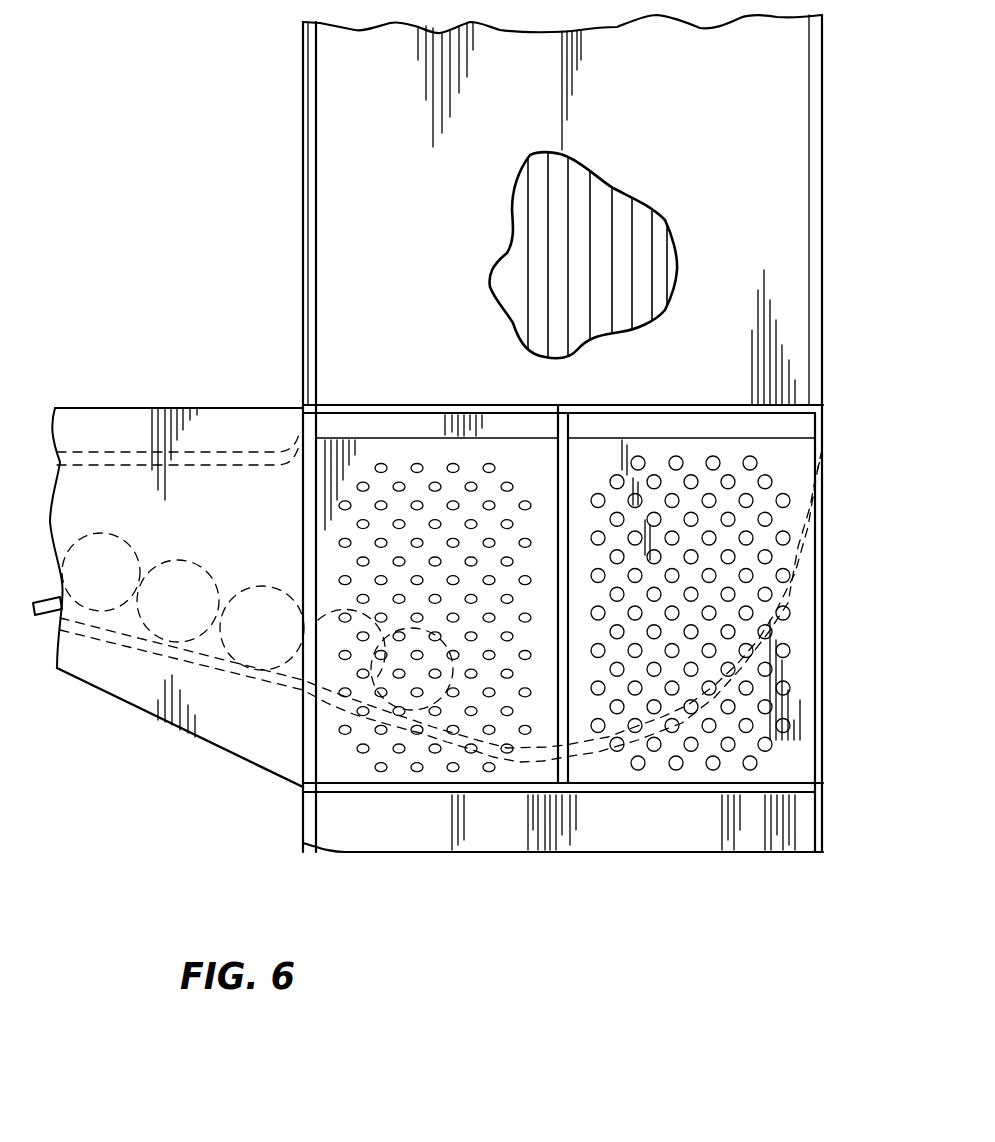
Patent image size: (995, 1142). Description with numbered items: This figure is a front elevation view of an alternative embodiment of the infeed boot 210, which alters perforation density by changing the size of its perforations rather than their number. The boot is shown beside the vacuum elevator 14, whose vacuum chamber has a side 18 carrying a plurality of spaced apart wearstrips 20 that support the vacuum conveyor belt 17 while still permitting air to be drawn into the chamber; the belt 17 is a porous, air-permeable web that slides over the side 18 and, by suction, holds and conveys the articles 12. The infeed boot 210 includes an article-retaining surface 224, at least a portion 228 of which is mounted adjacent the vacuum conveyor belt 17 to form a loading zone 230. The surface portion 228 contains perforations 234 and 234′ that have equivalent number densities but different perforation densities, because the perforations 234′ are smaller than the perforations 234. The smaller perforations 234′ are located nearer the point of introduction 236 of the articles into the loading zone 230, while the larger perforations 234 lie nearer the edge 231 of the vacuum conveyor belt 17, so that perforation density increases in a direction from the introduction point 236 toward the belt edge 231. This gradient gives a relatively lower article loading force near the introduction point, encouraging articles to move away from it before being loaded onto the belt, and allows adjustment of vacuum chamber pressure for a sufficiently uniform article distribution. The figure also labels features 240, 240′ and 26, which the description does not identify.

The vacuum elevator 14 is at (826, 258).
The vacuum conveyor belt 17 is at (401, 184).
The side of vacuum chamber 18 is at (578, 192).
The wearstrips 20 is at (660, 243).
The article-retaining surface portion 228 is at (533, 475).
The perforations region 240 is at (343, 752).
The smaller perforations 234′ is at (419, 770).
The loading zone 230 is at (831, 540).
The perforations region 240′ is at (611, 762).
The perforations 234 is at (641, 770).
The edge of vacuum conveyor belt 231 is at (836, 645).
The point of introduction 236 is at (296, 696).
The article-retaining surface 224 is at (258, 519).
The infeed boot 210 is at (284, 793).
The articles 12 is at (127, 543).
The pipe 26 is at (48, 615).